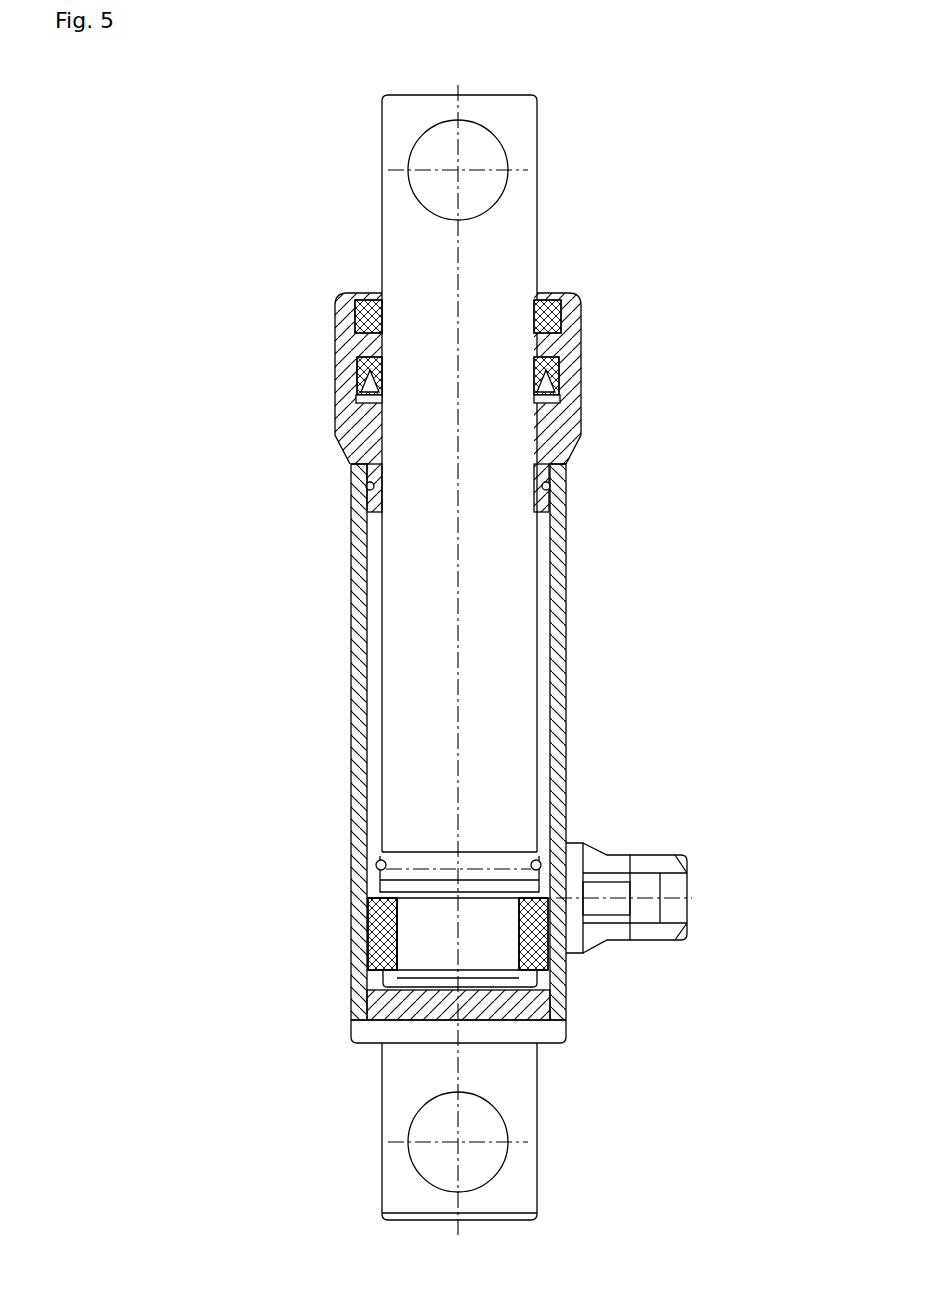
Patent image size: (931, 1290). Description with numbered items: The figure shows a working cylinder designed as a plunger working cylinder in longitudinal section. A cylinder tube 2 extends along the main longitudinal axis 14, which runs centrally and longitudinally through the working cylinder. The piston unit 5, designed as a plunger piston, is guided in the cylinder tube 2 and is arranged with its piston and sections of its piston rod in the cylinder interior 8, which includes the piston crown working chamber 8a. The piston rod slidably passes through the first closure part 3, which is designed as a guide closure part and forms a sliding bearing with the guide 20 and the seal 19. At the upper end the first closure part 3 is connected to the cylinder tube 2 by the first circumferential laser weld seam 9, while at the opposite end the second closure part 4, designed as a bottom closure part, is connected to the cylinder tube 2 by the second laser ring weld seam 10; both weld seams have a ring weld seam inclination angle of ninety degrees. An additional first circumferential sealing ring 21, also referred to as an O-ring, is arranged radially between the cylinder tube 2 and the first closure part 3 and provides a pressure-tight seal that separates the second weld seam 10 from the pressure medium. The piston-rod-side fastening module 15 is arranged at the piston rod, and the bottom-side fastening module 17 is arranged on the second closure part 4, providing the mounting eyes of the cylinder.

The cylinder tube 2 is at (563, 630).
The first closure part 3 is at (580, 430).
The second closure part 4 is at (538, 1006).
The piston unit 5 is at (508, 235).
The cylinder interior 8 is at (368, 1020).
The piston crown working chamber 8a is at (374, 843).
The first circumferential laser weld seam 9 is at (566, 470).
The second laser ring weld seam 10 is at (548, 1003).
The main longitudinal axis 14 is at (458, 697).
The piston-rod-side fastening module 15 is at (407, 128).
The bottom-side fastening module 17 is at (522, 1187).
The seal 19 is at (342, 392).
The guide 20 is at (362, 296).
The first circumferential sealing ring 21 is at (365, 500).